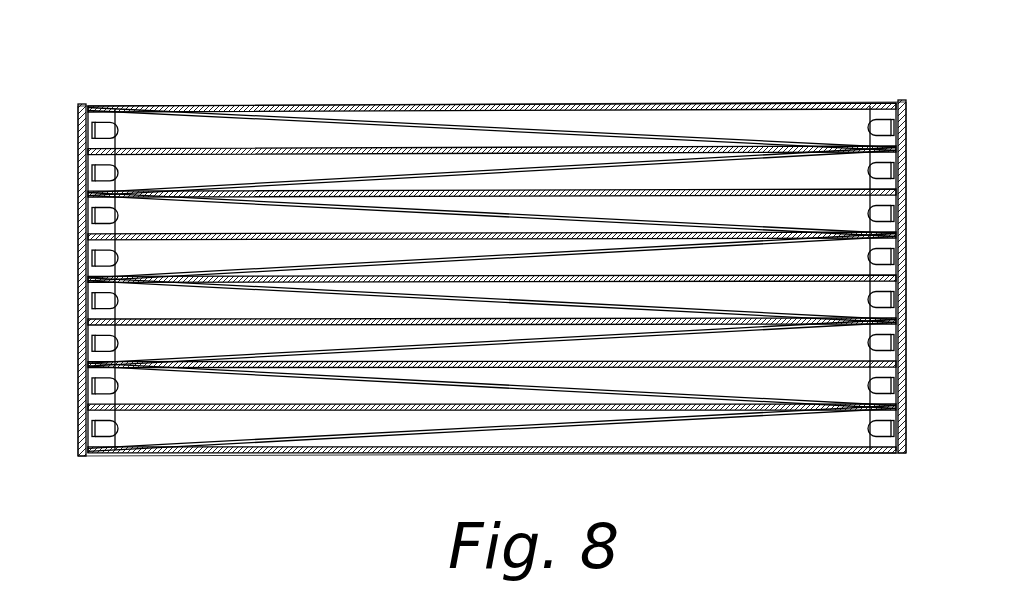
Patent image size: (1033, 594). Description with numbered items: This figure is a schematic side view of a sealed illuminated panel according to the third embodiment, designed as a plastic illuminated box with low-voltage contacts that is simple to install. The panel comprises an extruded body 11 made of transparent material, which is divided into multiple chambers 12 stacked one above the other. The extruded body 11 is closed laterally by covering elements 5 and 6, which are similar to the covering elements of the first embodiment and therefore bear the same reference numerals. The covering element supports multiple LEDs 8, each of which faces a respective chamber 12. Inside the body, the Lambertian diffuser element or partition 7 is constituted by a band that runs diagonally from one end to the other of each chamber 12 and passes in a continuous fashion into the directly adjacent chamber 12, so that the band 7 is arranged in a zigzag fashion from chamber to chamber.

The covering element 5 is at (79, 196).
The covering element 6 is at (908, 437).
The Lambertian diffuser element 7 is at (320, 123).
The LED 8 is at (117, 127).
The extruded body 11 is at (567, 93).
The chamber 12 is at (497, 117).